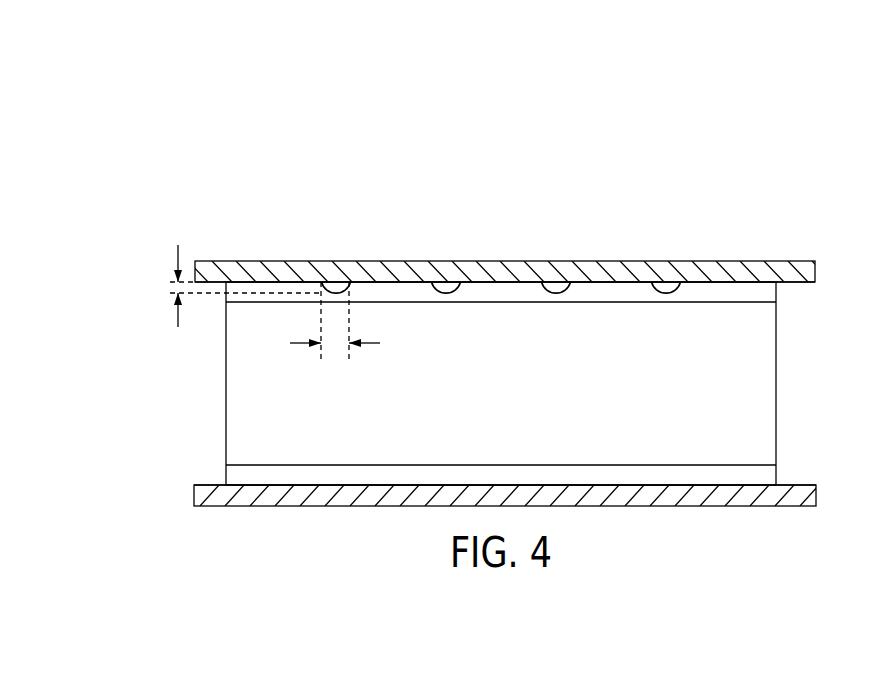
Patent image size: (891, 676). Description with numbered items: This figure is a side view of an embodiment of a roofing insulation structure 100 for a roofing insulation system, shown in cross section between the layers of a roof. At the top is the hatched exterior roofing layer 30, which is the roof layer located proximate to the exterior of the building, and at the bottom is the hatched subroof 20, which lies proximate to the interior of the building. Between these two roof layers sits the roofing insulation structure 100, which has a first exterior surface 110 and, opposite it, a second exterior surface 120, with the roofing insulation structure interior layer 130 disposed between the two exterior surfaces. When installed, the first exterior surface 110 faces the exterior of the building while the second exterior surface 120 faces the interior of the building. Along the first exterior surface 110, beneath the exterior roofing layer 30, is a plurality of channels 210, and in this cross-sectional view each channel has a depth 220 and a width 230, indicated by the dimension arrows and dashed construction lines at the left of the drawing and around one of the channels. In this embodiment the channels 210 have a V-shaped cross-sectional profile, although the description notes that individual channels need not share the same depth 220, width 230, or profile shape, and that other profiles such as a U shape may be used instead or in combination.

The roofing insulation structure 100 is at (269, 117).
The exterior roofing layer 30 is at (808, 274).
The first exterior surface 110 is at (719, 281).
The plurality of channels 210 is at (447, 281).
The depth 220 is at (176, 286).
The width 230 is at (332, 346).
The roofing insulation structure interior layer 130 is at (760, 382).
The subroof 20 is at (808, 499).
The second exterior surface 120 is at (708, 487).